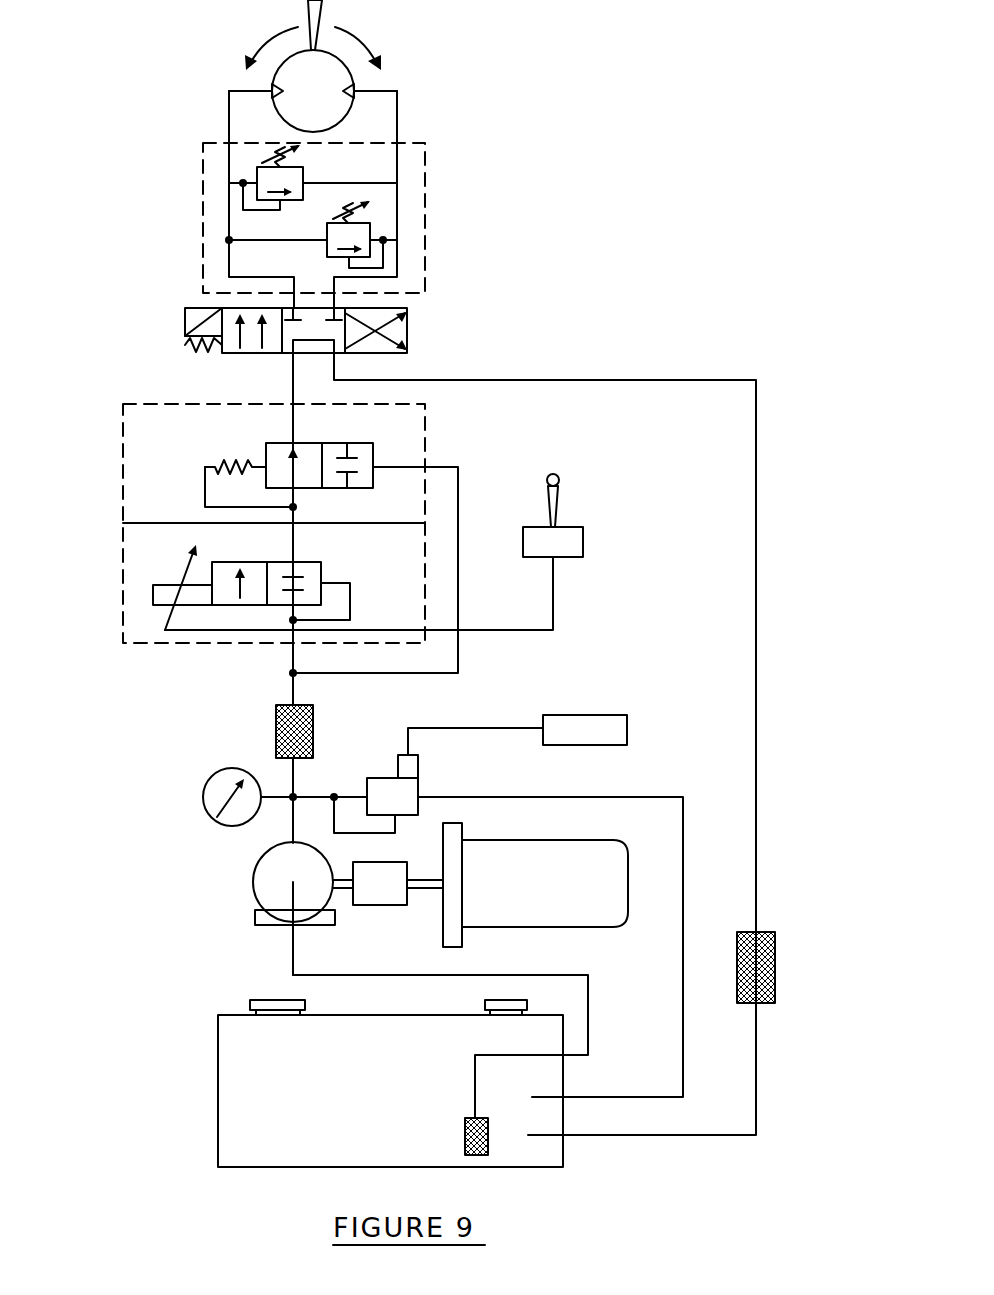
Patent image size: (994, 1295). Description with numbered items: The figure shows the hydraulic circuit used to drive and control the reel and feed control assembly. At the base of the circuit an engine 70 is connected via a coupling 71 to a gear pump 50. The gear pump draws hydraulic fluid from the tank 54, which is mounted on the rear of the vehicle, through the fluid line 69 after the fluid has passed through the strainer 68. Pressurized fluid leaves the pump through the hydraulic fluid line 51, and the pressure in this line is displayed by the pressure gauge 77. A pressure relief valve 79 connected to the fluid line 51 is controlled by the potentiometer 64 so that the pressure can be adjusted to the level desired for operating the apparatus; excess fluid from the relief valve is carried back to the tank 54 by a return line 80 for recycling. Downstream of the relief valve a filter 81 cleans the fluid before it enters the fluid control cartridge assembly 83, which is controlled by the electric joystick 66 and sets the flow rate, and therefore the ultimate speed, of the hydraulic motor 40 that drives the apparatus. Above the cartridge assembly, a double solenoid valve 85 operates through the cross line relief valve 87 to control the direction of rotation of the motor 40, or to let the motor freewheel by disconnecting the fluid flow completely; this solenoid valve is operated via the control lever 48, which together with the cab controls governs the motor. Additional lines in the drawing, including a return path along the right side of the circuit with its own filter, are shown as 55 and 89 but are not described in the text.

The hydraulic motor 40 is at (332, 105).
The control lever 48 is at (305, 3).
The gear pump 50 is at (270, 873).
The hydraulic fluid line 51 is at (290, 808).
The tank 54 is at (218, 1103).
The return line 55 is at (578, 380).
The potentiometer 64 is at (595, 728).
The electric joystick 66 is at (560, 490).
The strainer 68 is at (488, 1148).
The fluid line 69 is at (683, 1020).
The engine 70 is at (588, 868).
The coupling 71 is at (367, 897).
The pressure gauge 77 is at (208, 784).
The pressure relief valve 79 is at (400, 800).
The return line 80 is at (588, 1028).
The filter 81 is at (276, 737).
The fluid control cartridge assembly 83 is at (123, 470).
The double solenoid valve 85 is at (407, 333).
The cross line relief valve 87 is at (425, 213).
The return filter 89 is at (775, 948).